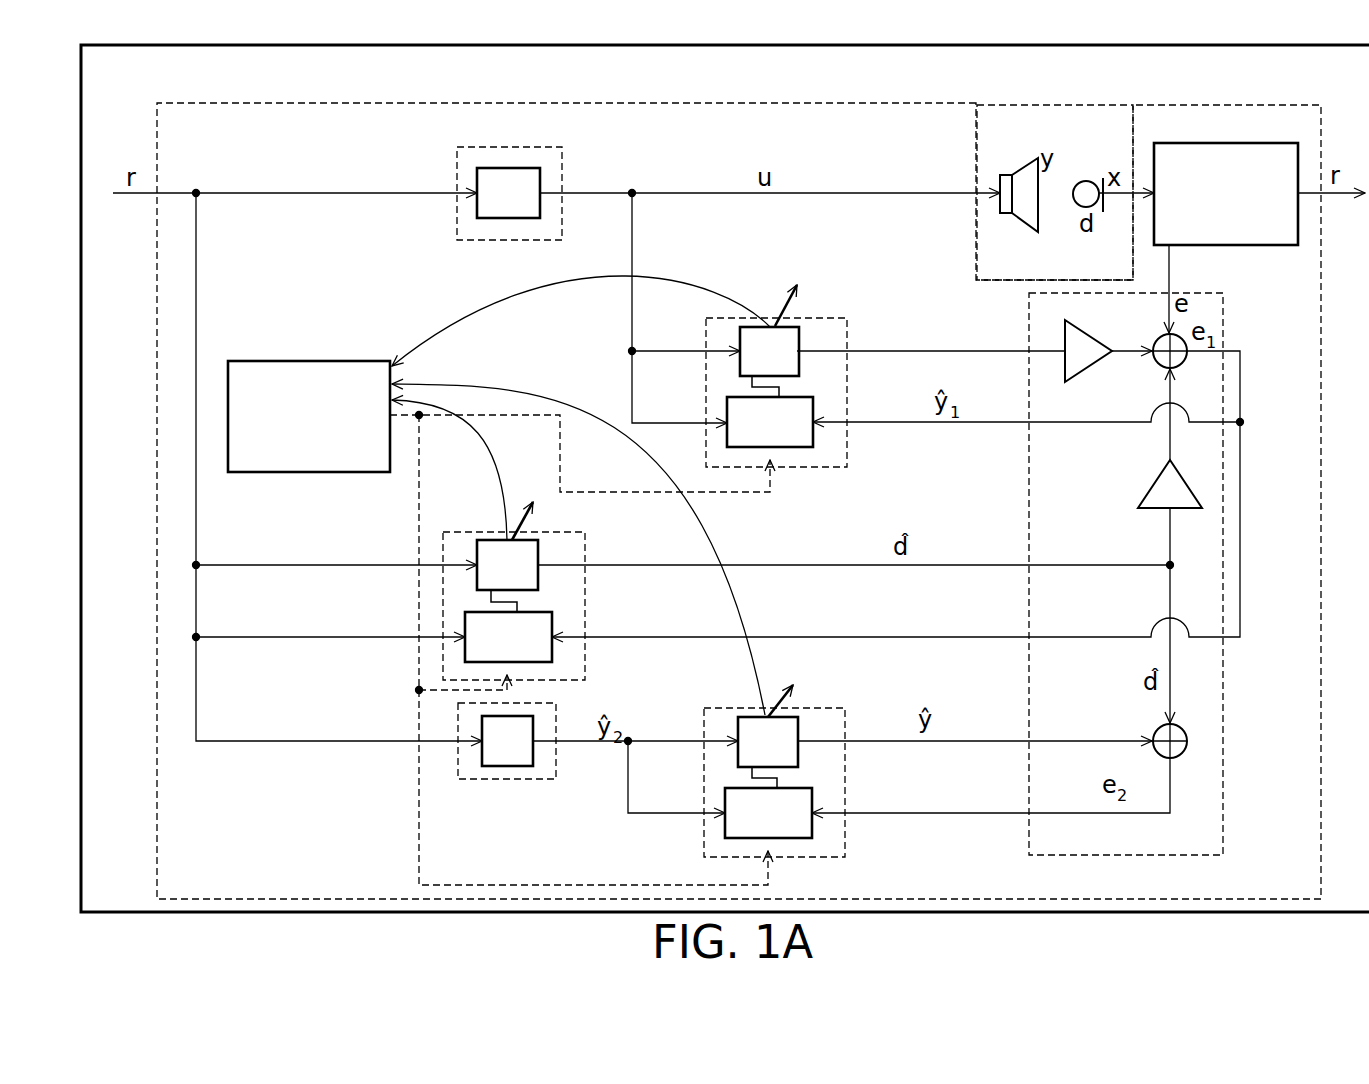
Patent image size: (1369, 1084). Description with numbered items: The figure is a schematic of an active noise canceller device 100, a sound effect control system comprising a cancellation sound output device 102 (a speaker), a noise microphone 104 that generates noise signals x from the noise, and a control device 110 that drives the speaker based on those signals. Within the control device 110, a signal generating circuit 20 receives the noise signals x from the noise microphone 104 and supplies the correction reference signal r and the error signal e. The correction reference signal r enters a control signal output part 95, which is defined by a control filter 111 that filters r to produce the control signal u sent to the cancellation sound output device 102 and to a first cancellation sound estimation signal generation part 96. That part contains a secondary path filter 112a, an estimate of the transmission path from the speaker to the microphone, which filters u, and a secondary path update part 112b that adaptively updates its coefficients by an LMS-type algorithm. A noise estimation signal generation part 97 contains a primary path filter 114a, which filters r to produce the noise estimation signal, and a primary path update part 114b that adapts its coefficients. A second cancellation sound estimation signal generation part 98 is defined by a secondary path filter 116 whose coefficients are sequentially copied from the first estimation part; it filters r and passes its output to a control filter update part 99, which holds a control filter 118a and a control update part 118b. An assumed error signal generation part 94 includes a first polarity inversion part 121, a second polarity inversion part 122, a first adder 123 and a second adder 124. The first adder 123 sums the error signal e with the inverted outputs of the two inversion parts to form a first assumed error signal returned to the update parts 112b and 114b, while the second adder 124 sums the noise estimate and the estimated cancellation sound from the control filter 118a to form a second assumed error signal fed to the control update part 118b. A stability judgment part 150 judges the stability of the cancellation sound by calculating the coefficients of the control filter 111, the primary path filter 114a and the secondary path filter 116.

The active noise canceller device 100 is at (124, 72).
The control device 110 is at (344, 103).
The control signal output part 95 is at (457, 157).
The control filter (W) 111 is at (509, 168).
The cancellation sound output device 102 is at (1021, 175).
The noise microphone 104 is at (1087, 181).
The signal generating circuit 20 is at (1265, 245).
The first polarity inversion part 121 is at (1085, 326).
The first adder 123 is at (1152, 362).
The second polarity inversion part 122 is at (1150, 485).
The second adder 124 is at (1186, 776).
The first cancellation sound estimation signal generation part 96 is at (848, 327).
The secondary path filter (Ĉ) 112a is at (799, 365).
The secondary path update part 112b is at (813, 437).
The noise estimation signal generation part 97 is at (460, 532).
The primary path filter (Ĥ) 114a is at (538, 575).
The primary path update part 114b is at (552, 652).
The second cancellation sound estimation signal generation part 98 is at (556, 768).
The secondary path filter (Ĉ) 116 is at (507, 767).
The control filter update part 99 is at (832, 708).
The control filter (W) 118a is at (798, 755).
The control update part 118b is at (812, 828).
The stability judgment part 150 is at (264, 361).
The assumed error signal generation part 94 is at (1029, 485).